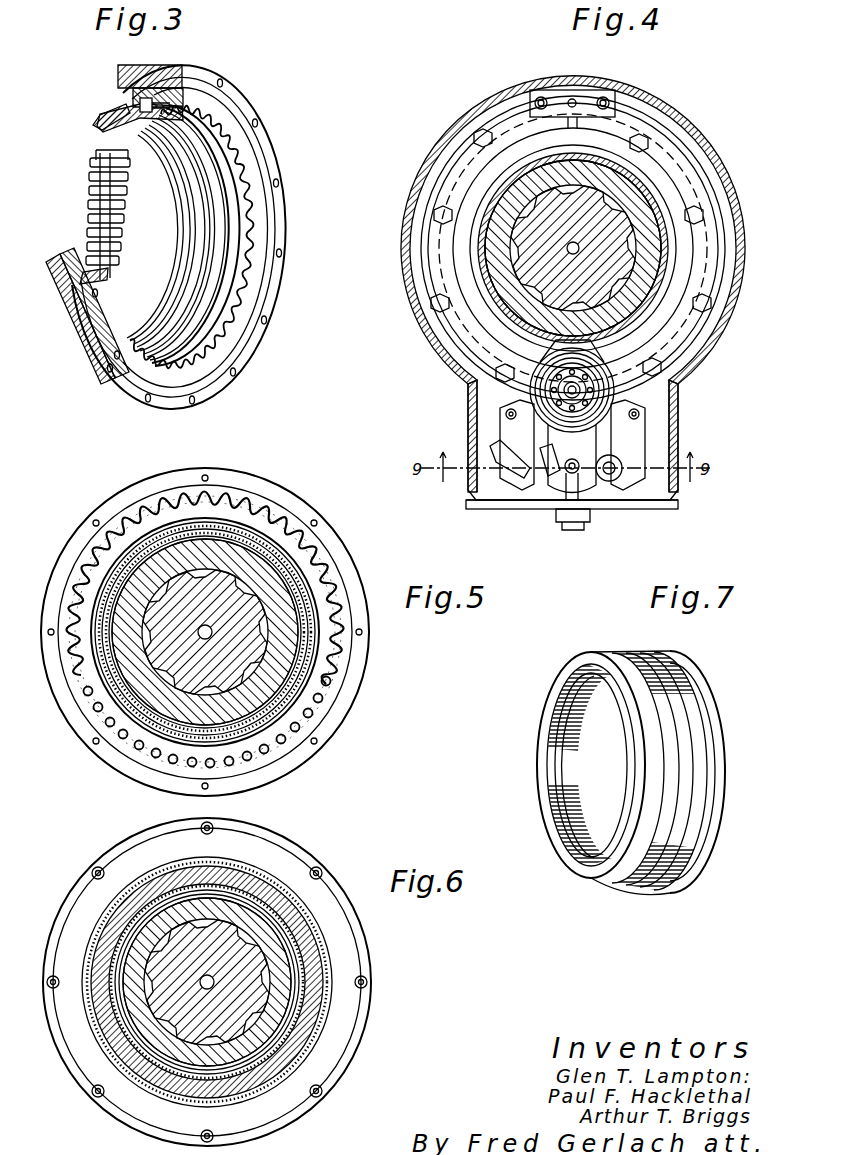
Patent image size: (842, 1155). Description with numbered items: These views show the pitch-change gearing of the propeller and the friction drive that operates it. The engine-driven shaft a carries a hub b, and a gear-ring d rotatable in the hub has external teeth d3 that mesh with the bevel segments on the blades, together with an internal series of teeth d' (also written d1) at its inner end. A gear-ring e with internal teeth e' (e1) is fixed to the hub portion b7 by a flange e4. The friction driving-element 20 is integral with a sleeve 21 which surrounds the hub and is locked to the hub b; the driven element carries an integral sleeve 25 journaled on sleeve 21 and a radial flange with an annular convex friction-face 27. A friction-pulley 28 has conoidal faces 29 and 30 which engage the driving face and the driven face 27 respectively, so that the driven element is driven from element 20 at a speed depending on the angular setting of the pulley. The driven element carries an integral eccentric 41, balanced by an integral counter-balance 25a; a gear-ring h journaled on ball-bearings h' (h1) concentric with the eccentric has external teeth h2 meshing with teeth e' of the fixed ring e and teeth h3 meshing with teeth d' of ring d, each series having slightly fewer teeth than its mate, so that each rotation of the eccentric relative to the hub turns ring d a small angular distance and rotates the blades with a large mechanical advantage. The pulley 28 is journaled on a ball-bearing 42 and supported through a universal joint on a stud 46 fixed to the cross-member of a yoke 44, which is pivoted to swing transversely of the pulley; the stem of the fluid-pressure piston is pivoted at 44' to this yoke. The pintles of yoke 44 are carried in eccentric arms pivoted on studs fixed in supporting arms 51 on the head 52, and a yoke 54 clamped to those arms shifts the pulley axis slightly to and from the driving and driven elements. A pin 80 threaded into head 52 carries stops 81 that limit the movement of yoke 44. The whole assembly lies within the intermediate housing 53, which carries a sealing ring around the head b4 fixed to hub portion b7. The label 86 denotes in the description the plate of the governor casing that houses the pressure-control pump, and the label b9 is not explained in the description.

In FIG. 4, the intermediate housing 53 is at (710, 112).
In FIG. 4, the plate 86 is at (430, 216).
In FIG. 4, the engine-driven shaft a is at (502, 250).
In FIG. 5, the engine-driven shaft a is at (300, 652).
In FIG. 6, the engine-driven shaft a is at (226, 932).
In FIG. 4, the sleeve 21 is at (465, 290).
In FIG. 5, the sleeve 21 is at (318, 630).
In FIG. 6, the sleeve 21 is at (304, 1012).
In FIG. 4, the friction-face 27 is at (478, 306).
In FIG. 7, the friction-face 27 is at (700, 676).
In FIG. 3, the hub b is at (160, 70).
In FIG. 4, the hub b is at (488, 334).
In FIG. 5, the hub b is at (298, 692).
In FIG. 6, the hub b is at (276, 950).
In FIG. 4, the conoidal friction-face 30 is at (536, 334).
In FIG. 4, the friction driving-element 20 is at (650, 330).
In FIG. 4, the stud 46 is at (598, 366).
In FIG. 4, the ball-bearing 42 is at (606, 384).
In FIG. 4, the friction-pulley 28 is at (594, 392).
In FIG. 4, the yoke 54 is at (505, 402).
In FIG. 4, the supporting arms 51 is at (506, 414).
In FIG. 4, the head 52 is at (490, 502).
In FIG. 4, the yoke 44 is at (510, 488).
In FIG. 4, the pivot 44' is at (568, 497).
In FIG. 4, the pin 80 is at (570, 474).
In FIG. 4, the stops 81 is at (576, 480).
In FIG. 5, the ball-bearings h' is at (188, 630).
In FIG. 6, the ball-bearings h' is at (223, 968).
In FIG. 5, the gear-ring h is at (205, 602).
In FIG. 5, the ball-bearings h1 is at (78, 570).
In FIG. 6, the ball-bearings h1 is at (223, 968).
In FIG. 3, the external teeth h2 is at (118, 216).
In FIG. 5, the external teeth h2 is at (218, 498).
In FIG. 3, the external teeth h3 is at (94, 190).
In FIG. 5, the sleeve 25 is at (138, 546).
In FIG. 6, the sleeve 25 is at (300, 1048).
In FIG. 7, the sleeve 25 is at (662, 668).
In FIG. 7, the counter-balance 25a is at (645, 880).
In FIG. 5, the eccentric 41 is at (174, 526).
In FIG. 6, the eccentric 41 is at (212, 872).
In FIG. 7, the eccentric 41 is at (590, 660).
In FIG. 5, the hub portion b7 is at (275, 532).
In FIG. 6, the head b4 is at (207, 941).
In FIG. 6, the drum flange b9 is at (228, 880).
In FIG. 3, the gear-ring e is at (195, 216).
In FIG. 5, the gear-ring e is at (205, 632).
In FIG. 3, the internal gear-teeth e' is at (213, 216).
In FIG. 5, the internal gear-teeth e' is at (220, 632).
In FIG. 5, the internal gear-teeth e1 is at (326, 578).
In FIG. 3, the flange e4 is at (262, 135).
In FIG. 3, the gear-ring d is at (142, 250).
In FIG. 3, the internal gear-teeth d1 is at (174, 74).
In FIG. 3, the internal gear-teeth d' is at (174, 74).
In FIG. 3, the external teeth d3 is at (103, 122).
In FIG. 7, the conoidal friction-face 29 is at (706, 742).